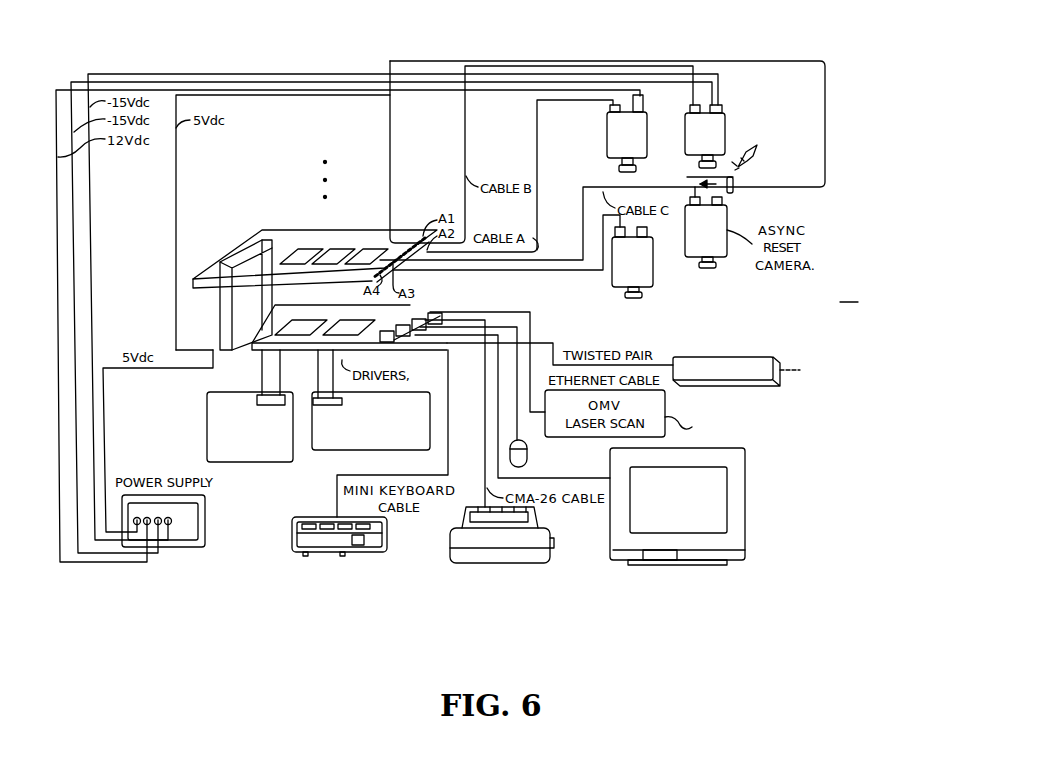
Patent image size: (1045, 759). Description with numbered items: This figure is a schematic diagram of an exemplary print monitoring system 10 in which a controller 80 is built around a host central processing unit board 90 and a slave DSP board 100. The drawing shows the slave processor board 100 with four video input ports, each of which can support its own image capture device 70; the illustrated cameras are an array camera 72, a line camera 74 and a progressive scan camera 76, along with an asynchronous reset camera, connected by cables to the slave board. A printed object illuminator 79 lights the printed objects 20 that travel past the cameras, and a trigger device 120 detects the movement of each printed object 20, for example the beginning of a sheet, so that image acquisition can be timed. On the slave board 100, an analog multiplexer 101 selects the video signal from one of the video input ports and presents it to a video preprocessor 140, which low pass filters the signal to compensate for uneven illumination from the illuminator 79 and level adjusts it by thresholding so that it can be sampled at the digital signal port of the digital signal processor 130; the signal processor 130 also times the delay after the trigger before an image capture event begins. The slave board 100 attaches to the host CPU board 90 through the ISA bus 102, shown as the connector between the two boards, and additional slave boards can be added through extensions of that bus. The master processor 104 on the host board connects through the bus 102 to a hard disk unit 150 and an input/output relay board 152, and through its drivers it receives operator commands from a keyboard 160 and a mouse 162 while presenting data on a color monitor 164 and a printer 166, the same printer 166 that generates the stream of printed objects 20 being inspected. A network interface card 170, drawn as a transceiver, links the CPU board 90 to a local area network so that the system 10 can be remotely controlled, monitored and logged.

The print monitoring system 10 is at (864, 303).
The printed objects 20 is at (687, 177).
The image capture device 70 is at (834, 154).
The array camera 72 is at (606, 130).
The line camera 74 is at (752, 128).
The progressive scan camera 76 is at (620, 297).
The printed object illuminator 79 is at (757, 160).
The controller 80 is at (301, 163).
The host central processing unit board 90 is at (418, 293).
The slave processor board 100 is at (267, 229).
The analog multiplexer 101 is at (541, 152).
The ISA bus 102 is at (218, 318).
The master processor 104 is at (303, 322).
The trigger device 120 is at (735, 190).
The digital signal processor 130 is at (306, 248).
The video preprocessor 140 is at (350, 248).
The hard disk unit 150 is at (207, 430).
The input/output relay board 152 is at (320, 453).
The keyboard 160 is at (338, 553).
The mouse 162 is at (528, 455).
The color monitor 164 is at (747, 523).
The printer 166 is at (498, 565).
The network interface card 170 is at (735, 355).